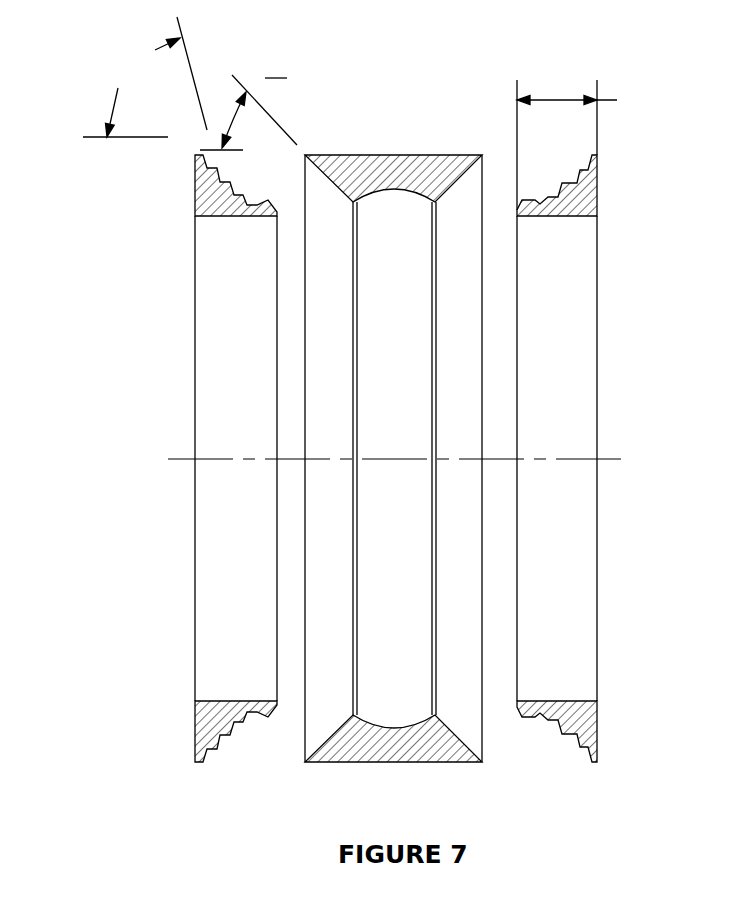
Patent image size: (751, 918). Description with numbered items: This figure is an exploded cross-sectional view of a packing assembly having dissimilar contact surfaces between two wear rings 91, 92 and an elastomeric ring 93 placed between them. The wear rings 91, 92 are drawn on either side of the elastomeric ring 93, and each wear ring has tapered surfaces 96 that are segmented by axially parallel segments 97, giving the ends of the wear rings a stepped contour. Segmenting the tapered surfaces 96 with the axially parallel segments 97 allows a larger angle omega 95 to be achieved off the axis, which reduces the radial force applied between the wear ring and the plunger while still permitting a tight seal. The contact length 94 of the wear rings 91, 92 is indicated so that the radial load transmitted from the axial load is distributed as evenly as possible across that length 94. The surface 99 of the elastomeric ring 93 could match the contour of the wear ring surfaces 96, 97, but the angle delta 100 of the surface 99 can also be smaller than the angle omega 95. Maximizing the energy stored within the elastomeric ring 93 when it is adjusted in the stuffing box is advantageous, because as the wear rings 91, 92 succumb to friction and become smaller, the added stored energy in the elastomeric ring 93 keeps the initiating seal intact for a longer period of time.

The wear ring 91 is at (197, 211).
The wear ring 92 is at (592, 190).
The elastomeric ring 93 is at (412, 166).
The contact length 94 is at (645, 98).
The angle omega 95 is at (118, 67).
The tapered surfaces 96 is at (560, 183).
The axially parallel segments 97 is at (552, 723).
The surface of the elastomeric ring 99 is at (323, 745).
The angle delta 100 is at (320, 77).